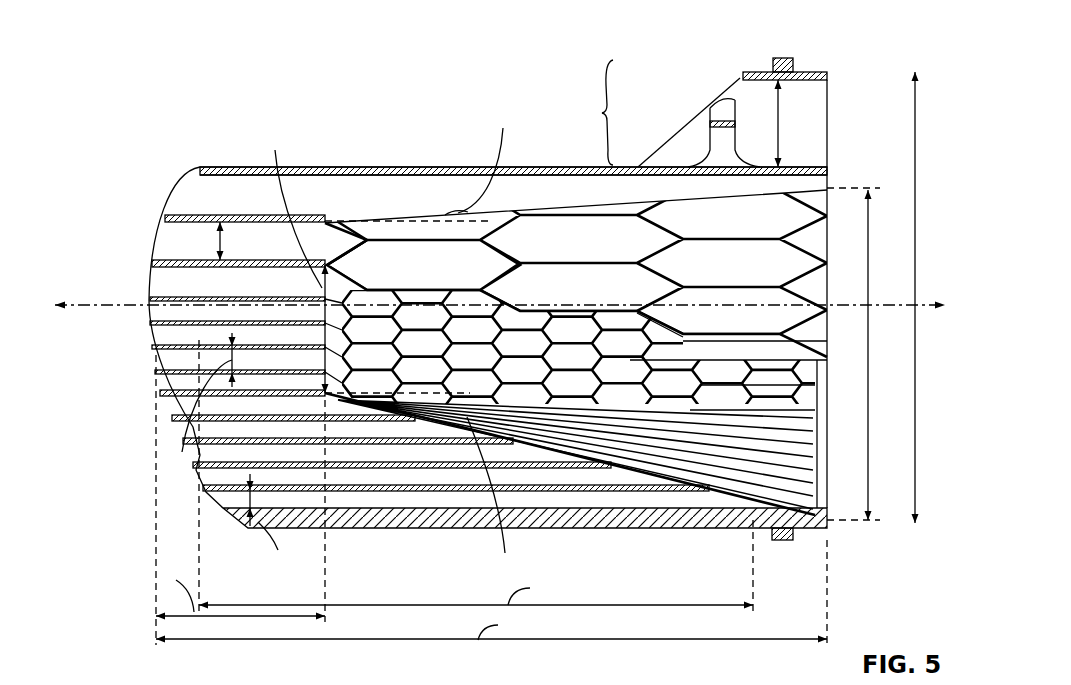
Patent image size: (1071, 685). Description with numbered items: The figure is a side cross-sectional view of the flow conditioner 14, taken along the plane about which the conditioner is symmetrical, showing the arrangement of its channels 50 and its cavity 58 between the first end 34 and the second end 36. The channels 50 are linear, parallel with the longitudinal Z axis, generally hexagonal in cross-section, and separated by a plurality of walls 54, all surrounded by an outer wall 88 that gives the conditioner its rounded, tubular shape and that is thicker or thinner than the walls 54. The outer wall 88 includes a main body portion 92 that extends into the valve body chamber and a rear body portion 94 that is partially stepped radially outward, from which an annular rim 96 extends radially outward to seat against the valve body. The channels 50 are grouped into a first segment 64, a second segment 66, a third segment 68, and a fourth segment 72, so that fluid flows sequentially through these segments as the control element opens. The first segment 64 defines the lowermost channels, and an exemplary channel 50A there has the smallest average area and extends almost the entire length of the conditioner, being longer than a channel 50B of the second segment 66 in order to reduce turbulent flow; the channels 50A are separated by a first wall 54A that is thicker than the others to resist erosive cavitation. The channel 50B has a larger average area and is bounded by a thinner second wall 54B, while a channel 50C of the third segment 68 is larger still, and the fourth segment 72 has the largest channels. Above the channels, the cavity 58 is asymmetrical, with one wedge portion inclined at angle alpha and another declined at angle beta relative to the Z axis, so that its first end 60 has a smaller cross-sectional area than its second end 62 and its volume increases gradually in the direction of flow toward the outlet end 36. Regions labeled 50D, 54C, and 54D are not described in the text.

The flow conditioner 14 is at (129, 50).
The first end 34 is at (188, 178).
The second end 36 is at (827, 190).
The channels 50 is at (380, 474).
The channel of the first segment 50A is at (337, 497).
The channel of the second segment 50B is at (175, 357).
The channel of the third segment 50C is at (172, 232).
The nozzle / inlet port 50D is at (760, 93).
The walls 54 is at (435, 466).
The first wall 54A is at (547, 488).
The second wall 54B is at (297, 298).
The upper plate 54C is at (168, 190).
The uppermost plate 54D is at (220, 214).
The cavity 58 is at (725, 376).
The first end of the cavity 60 is at (326, 262).
The second end of the cavity 62 is at (830, 392).
The first segment 64 is at (139, 383).
The second segment 66 is at (139, 303).
The third segment 68 is at (139, 235).
The fourth segment 72 is at (139, 168).
The outer wall 88 is at (385, 167).
The main body portion 92 is at (410, 175).
The rear body portion 94 is at (815, 95).
The annular rim 96 is at (783, 60).